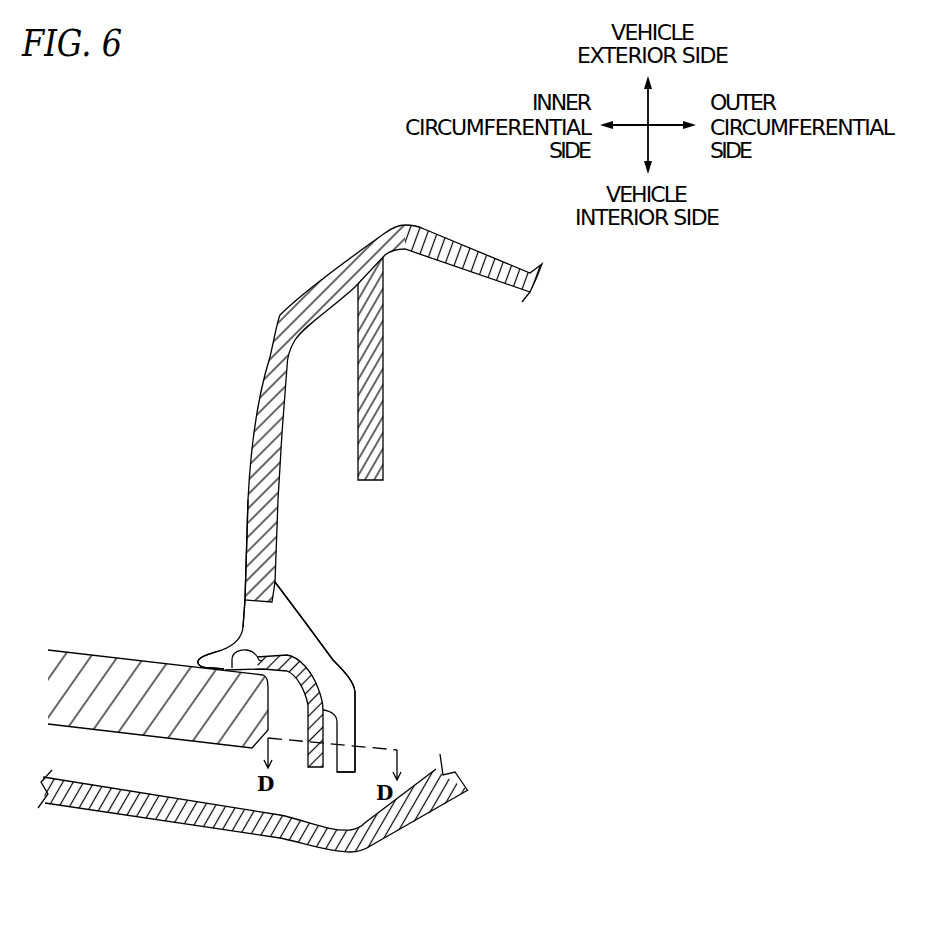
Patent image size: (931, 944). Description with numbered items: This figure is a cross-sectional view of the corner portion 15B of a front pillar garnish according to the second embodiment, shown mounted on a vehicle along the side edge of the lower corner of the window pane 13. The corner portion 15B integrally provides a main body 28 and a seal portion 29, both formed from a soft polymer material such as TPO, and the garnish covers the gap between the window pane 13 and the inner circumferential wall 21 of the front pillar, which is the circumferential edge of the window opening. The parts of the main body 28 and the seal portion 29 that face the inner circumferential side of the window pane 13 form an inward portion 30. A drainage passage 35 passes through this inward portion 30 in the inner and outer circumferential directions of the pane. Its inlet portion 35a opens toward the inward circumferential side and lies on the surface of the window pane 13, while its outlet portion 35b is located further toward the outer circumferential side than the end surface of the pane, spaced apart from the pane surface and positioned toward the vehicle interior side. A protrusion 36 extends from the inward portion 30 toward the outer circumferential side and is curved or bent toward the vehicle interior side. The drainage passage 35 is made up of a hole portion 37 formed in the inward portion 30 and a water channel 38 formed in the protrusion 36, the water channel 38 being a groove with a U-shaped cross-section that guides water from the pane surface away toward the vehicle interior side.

The window pane 13 is at (87, 652).
The corner portion 15B is at (330, 557).
The inner circumferential wall 21 is at (358, 392).
The main body 28 is at (268, 352).
The seal portion 29 is at (203, 653).
The inward portion 30 is at (240, 555).
The drainage passage 35 is at (238, 602).
The inlet portion 35a is at (242, 623).
The outlet portion 35b is at (335, 772).
The protrusion 36 is at (308, 622).
The hole portion 37 is at (232, 666).
The water channel 38 is at (335, 772).